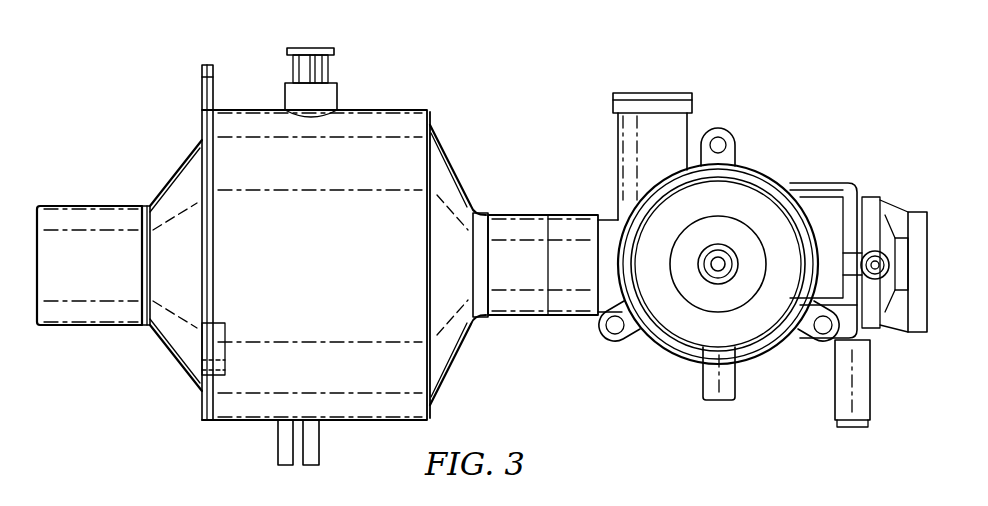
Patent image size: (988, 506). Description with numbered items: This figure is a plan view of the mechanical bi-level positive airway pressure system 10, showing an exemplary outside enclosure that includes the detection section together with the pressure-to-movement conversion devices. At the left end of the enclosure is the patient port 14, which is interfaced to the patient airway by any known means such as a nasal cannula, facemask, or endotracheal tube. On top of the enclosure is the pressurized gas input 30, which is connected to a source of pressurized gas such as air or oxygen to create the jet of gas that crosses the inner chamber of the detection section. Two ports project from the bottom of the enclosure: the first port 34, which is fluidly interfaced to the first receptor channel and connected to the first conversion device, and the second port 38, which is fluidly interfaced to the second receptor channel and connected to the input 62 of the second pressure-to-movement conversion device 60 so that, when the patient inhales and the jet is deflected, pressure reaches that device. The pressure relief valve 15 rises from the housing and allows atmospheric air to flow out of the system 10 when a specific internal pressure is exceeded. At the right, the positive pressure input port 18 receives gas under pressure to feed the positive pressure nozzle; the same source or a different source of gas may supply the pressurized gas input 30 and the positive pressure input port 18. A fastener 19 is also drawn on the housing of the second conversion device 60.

The bi-level positive airway pressure system 10 is at (764, 78).
The patient port 14 is at (77, 206).
The pressure relief valve 15 is at (632, 127).
The positive pressure input port 18 is at (870, 384).
The fastener 19 is at (878, 250).
The pressurized gas input 30 is at (310, 48).
The first port 34 is at (320, 440).
The second port 38 is at (278, 440).
The second pressure-to-movement conversion device 60 is at (752, 347).
The input 62 is at (703, 383).